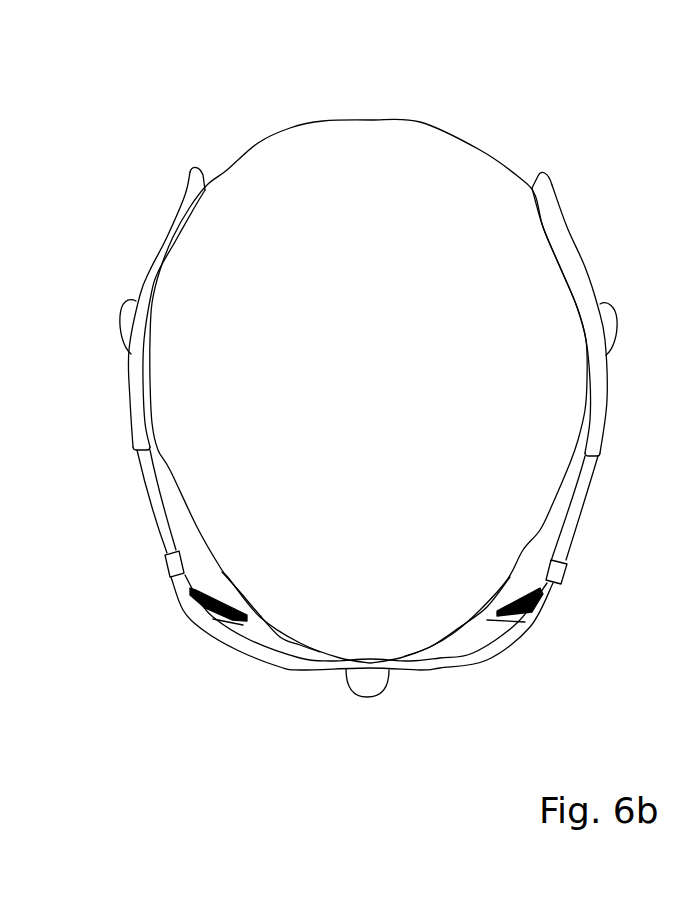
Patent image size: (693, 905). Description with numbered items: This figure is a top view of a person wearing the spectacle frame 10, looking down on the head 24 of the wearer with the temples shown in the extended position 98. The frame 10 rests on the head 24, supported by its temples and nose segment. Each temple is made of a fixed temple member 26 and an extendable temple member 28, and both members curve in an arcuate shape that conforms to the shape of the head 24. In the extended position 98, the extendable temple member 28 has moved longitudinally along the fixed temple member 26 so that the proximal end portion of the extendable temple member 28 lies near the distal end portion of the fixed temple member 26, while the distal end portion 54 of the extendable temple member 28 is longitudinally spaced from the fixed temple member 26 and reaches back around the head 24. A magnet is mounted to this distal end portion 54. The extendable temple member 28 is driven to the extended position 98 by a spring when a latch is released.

The spectacle frame 10 is at (603, 490).
The head 24 is at (373, 135).
The fixed temple member 26 is at (582, 532).
The extendable temple member 28 is at (157, 235).
The distal end portion of the extendable temple member 54 is at (188, 193).
The extended position 98 is at (120, 522).